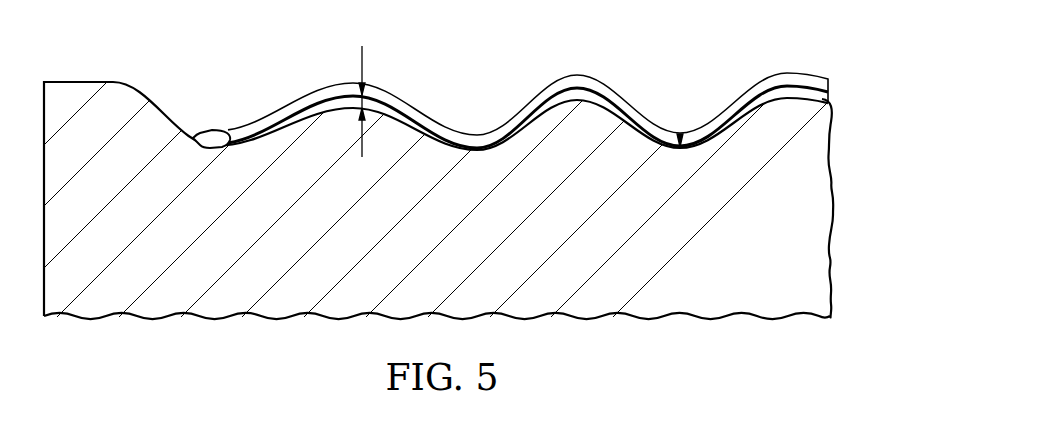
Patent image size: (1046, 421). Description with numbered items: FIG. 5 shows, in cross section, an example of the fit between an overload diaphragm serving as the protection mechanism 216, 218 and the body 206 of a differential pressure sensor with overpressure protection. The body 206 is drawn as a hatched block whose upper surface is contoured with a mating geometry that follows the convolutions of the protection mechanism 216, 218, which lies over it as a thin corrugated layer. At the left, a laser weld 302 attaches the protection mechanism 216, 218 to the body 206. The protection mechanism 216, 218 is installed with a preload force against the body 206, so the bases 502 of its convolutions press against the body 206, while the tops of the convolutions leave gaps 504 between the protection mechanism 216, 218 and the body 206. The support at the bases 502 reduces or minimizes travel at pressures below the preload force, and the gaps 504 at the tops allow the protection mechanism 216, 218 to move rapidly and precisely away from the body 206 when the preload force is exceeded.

The body 206 is at (831, 207).
The protection mechanism 216 is at (590, 110).
The protection mechanism 218 is at (831, 91).
The laser weld 302 is at (213, 130).
The bases of convolutions 502 is at (680, 134).
The gaps 504 is at (360, 62).